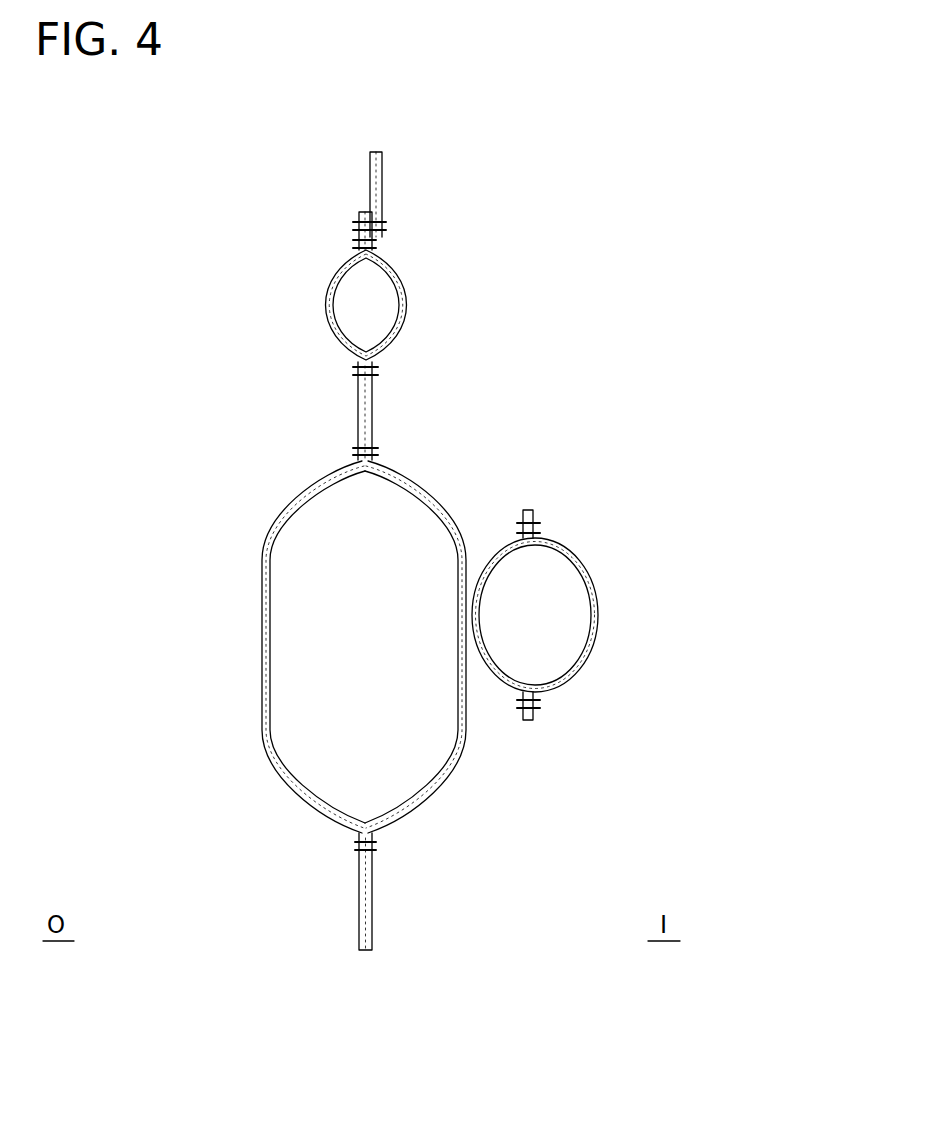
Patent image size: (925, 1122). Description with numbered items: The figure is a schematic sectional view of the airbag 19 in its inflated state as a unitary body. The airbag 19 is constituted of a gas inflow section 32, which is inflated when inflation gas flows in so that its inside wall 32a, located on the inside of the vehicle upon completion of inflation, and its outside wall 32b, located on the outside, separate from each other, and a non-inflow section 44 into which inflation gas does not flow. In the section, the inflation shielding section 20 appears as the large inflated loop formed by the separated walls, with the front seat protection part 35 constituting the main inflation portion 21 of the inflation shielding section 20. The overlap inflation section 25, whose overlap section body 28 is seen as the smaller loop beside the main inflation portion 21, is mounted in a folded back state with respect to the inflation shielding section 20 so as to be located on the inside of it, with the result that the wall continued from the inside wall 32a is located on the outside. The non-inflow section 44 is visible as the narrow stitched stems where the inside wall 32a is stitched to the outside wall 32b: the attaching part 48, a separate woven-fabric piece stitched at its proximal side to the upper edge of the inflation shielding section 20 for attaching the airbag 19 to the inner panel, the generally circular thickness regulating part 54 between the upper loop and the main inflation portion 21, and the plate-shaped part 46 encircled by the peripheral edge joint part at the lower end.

The airbag 19 is at (597, 299).
The inflation shielding section 20 is at (300, 285).
The main inflation portion 21 is at (338, 640).
The overlap inflation section 25 is at (636, 615).
The overlap section body 28 is at (600, 576).
The gas inflow section 32 is at (441, 640).
The inside wall 32a is at (462, 743).
The outside wall 32b is at (263, 713).
The front seat protection part 35 is at (296, 493).
The non-inflow section 44 is at (370, 513).
The plate-shaped part 46 is at (359, 893).
The attaching part 48 is at (391, 178).
The thickness regulating part 54 is at (385, 404).